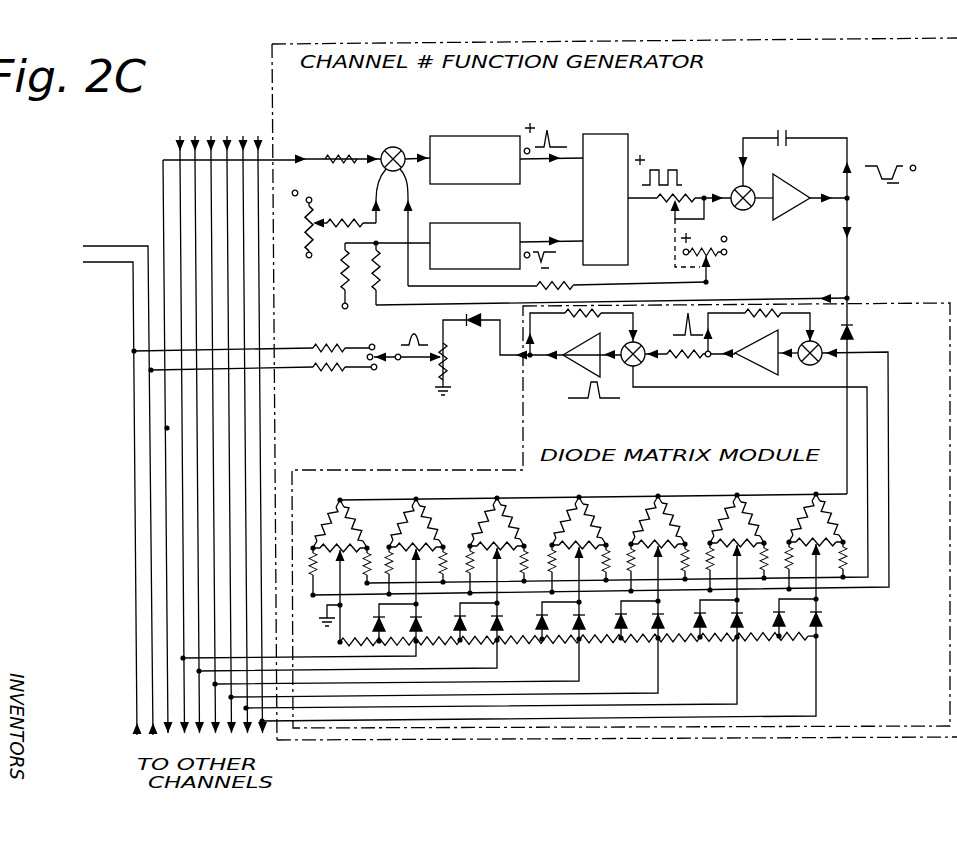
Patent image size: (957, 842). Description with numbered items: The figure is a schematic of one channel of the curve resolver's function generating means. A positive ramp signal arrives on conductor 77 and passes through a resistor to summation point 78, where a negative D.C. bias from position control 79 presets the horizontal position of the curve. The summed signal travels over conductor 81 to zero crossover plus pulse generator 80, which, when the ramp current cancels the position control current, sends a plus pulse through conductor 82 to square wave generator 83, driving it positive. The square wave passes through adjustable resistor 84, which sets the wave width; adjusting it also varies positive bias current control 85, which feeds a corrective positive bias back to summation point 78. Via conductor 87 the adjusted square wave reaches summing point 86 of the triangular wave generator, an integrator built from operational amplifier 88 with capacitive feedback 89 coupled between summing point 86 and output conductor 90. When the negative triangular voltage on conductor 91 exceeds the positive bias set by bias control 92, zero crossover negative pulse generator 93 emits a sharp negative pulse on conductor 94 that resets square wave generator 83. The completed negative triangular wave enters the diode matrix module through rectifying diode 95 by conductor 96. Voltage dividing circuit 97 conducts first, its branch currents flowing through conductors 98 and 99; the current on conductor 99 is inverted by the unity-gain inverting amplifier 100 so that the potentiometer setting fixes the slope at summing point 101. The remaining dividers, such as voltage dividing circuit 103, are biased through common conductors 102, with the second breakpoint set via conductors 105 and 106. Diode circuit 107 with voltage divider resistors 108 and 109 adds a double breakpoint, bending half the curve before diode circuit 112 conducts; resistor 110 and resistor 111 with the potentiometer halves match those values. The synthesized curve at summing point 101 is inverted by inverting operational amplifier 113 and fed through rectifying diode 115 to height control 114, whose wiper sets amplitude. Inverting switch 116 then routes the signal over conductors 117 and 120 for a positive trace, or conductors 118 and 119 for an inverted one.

The conductor 77 is at (166, 428).
The summation point 78 is at (385, 150).
The position control 79 is at (316, 220).
The zero crossover plus pulse generator 80 is at (492, 130).
The conductor 81 is at (418, 152).
The conductor 82 is at (578, 150).
The square wave generator 83 is at (616, 142).
The adjustable resistor (width control) 84 is at (706, 219).
The positive bias current control 85 is at (713, 256).
The summing point 86 is at (745, 185).
The conductor 87 is at (722, 186).
The operational amplifier 88 is at (788, 190).
The capacitive feedback 89 is at (850, 138).
The output conductor 90 is at (850, 263).
The conductor 91 is at (795, 298).
The bias control 92 is at (340, 268).
The zero crossover negative pulse generator 93 is at (482, 230).
The conductor 94 is at (542, 238).
The rectifying diode 95 is at (851, 333).
The conductor 96 is at (847, 440).
The voltage dividing circuit 97 is at (330, 512).
The conductor 98 is at (870, 529).
The conductor 99 is at (887, 585).
The 1:1 inverting amplifier 100 is at (765, 350).
The summing point 101 is at (642, 360).
The conductors 102 is at (262, 121).
The voltage dividing circuit 103 is at (423, 514).
The conductor 105 is at (178, 147).
The conductor 106 is at (559, 640).
The diode circuit 107 is at (408, 605).
The voltage divider resistor 108 is at (350, 704).
The voltage divider resistor 109 is at (402, 704).
The resistor 110 is at (400, 512).
The resistor 111 is at (440, 530).
The diode circuit 112 is at (420, 625).
The inverting operational amplifier 113 is at (578, 362).
The height control 114 is at (436, 360).
The rectifying diode 115 is at (450, 358).
The inverting switch 116 is at (376, 351).
The conductor 117 is at (252, 334).
The conductor 118 is at (262, 382).
The conductor 119 is at (99, 483).
The conductor 120 is at (87, 492).